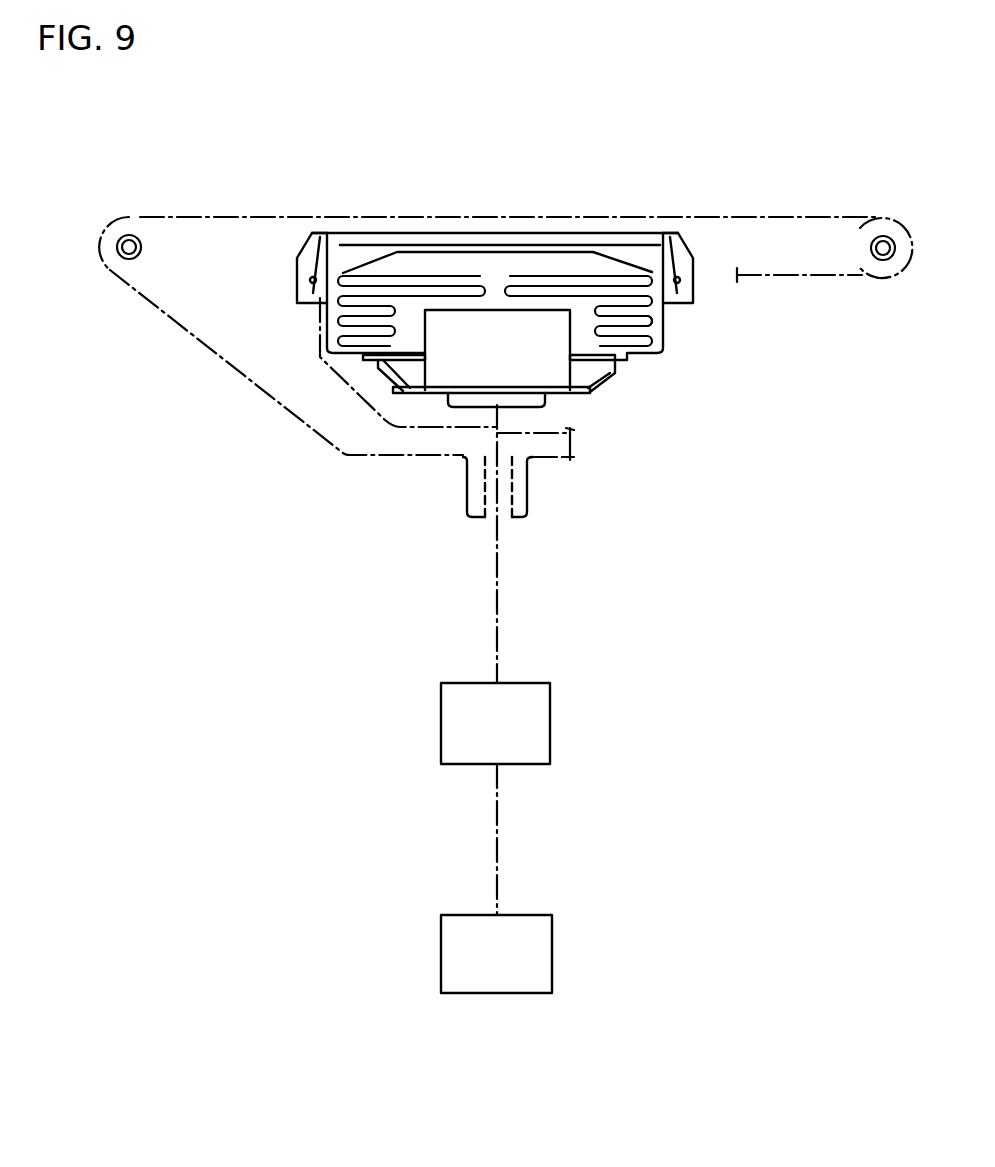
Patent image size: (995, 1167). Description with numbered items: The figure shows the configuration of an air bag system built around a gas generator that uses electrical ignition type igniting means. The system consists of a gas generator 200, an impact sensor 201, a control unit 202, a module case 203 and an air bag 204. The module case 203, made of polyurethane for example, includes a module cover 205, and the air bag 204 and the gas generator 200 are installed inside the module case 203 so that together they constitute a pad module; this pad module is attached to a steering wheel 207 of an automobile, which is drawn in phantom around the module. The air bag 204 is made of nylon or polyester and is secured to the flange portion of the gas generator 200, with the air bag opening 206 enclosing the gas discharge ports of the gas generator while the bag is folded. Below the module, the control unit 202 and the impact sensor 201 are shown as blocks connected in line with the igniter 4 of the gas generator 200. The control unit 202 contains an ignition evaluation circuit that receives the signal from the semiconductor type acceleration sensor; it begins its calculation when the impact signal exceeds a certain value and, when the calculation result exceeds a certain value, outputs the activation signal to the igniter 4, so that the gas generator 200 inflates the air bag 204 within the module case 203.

The igniter 4 is at (486, 400).
The gas generator 200 is at (418, 376).
The impact sensor 201 is at (441, 956).
The control unit 202 is at (441, 720).
The module case 203 is at (643, 230).
The air bag 204 is at (375, 268).
The module cover 205 is at (492, 232).
The air bag opening 206 is at (617, 327).
The steering wheel 207 is at (767, 217).